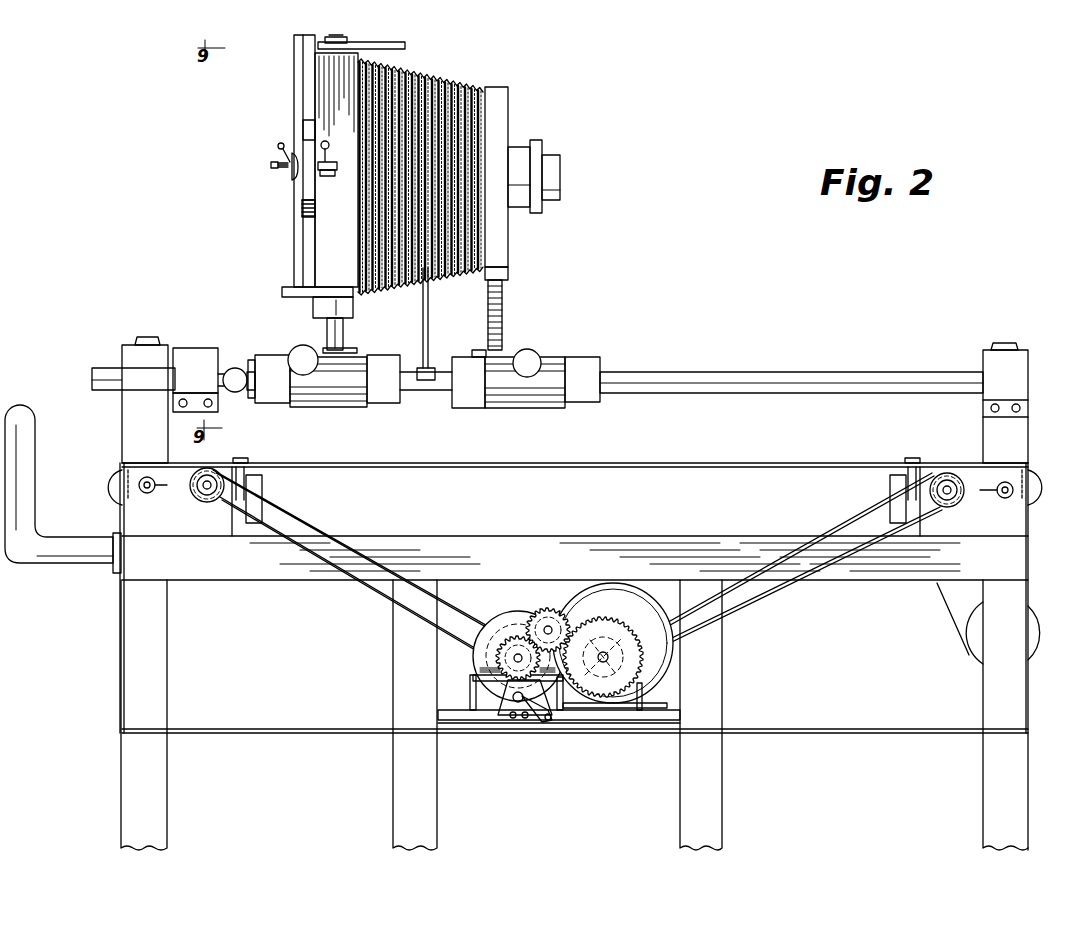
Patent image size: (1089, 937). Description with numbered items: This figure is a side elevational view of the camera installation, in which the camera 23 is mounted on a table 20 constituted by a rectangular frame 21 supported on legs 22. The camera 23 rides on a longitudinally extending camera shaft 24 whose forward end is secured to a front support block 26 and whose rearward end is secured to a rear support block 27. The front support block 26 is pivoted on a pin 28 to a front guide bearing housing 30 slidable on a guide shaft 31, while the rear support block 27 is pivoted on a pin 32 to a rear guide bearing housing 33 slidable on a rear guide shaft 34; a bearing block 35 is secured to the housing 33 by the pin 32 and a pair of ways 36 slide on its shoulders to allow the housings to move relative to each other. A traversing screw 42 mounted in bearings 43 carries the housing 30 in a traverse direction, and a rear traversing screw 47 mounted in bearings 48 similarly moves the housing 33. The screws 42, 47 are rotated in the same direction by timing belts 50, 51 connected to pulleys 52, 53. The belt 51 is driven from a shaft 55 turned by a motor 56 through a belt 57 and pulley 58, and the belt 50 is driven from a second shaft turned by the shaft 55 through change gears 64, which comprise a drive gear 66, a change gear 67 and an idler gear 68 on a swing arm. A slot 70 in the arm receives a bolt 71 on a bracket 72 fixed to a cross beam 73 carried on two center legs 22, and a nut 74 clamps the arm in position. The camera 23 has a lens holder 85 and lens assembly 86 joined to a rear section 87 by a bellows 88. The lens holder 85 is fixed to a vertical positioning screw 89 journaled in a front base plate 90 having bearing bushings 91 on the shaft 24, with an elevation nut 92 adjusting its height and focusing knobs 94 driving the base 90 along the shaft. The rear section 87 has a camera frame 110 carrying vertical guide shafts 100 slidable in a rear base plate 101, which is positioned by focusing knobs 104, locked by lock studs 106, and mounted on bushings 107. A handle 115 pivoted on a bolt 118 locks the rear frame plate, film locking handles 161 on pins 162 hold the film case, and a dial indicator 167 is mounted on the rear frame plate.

The table 20 is at (246, 589).
The rectangular frame 21 is at (491, 546).
The legs 22 is at (574, 715).
The camera 23 is at (416, 166).
The camera shaft 24 is at (775, 393).
The front support block 26 is at (1029, 362).
The rear support block 27 is at (196, 348).
The pin 28 is at (1008, 343).
The front guide bearing housing 30 is at (1035, 492).
The guide shaft 31 is at (1004, 498).
The pin 32 is at (148, 337).
The rear guide bearing housing 33 is at (116, 486).
The rear guide shaft 34 is at (147, 493).
The bearing block 35 is at (145, 360).
The ways 36 is at (140, 378).
The traversing screw 42 is at (947, 506).
The bearings 43 is at (931, 463).
The rear traversing screw 47 is at (200, 501).
The bearings 48 is at (232, 458).
The timing belt 50 is at (768, 590).
The timing belt 51 is at (345, 600).
The pulley 52 is at (960, 500).
The pulley 53 is at (208, 501).
The shaft 55 is at (512, 658).
The motor 56 is at (605, 588).
The belt 57 is at (605, 619).
The pulley 58 is at (508, 617).
The change gears 64 is at (565, 597).
The drive gear 66 is at (495, 676).
The change gear 67 is at (642, 665).
The idler gear 68 is at (569, 622).
The slot 70 is at (510, 716).
The bolt 71 is at (522, 720).
The bracket 72 is at (546, 721).
The cross beam 73 is at (638, 720).
The nut 74 is at (516, 738).
The lens holder 85 is at (503, 135).
The lens assembly 86 is at (562, 165).
The rear section 87 is at (290, 235).
The bellows 88 is at (431, 278).
The vertical positioning screw 89 is at (503, 310).
The front base plate 90 is at (560, 356).
The bearing bushings 91 is at (488, 408).
The elevation nut 92 is at (476, 350).
The focusing knobs 94 is at (527, 350).
The vertical guide shafts 100 is at (345, 333).
The rear base plate 101 is at (346, 407).
The focusing knobs 104 is at (303, 354).
The lock studs 106 is at (237, 392).
The bearing bushing 107 is at (291, 403).
The camera frame 110 is at (353, 305).
The handle 115 is at (279, 145).
The bolt 118 is at (271, 165).
The film locking handles 161 is at (327, 160).
The pins 162 is at (335, 177).
The dial indicator 167 is at (292, 172).